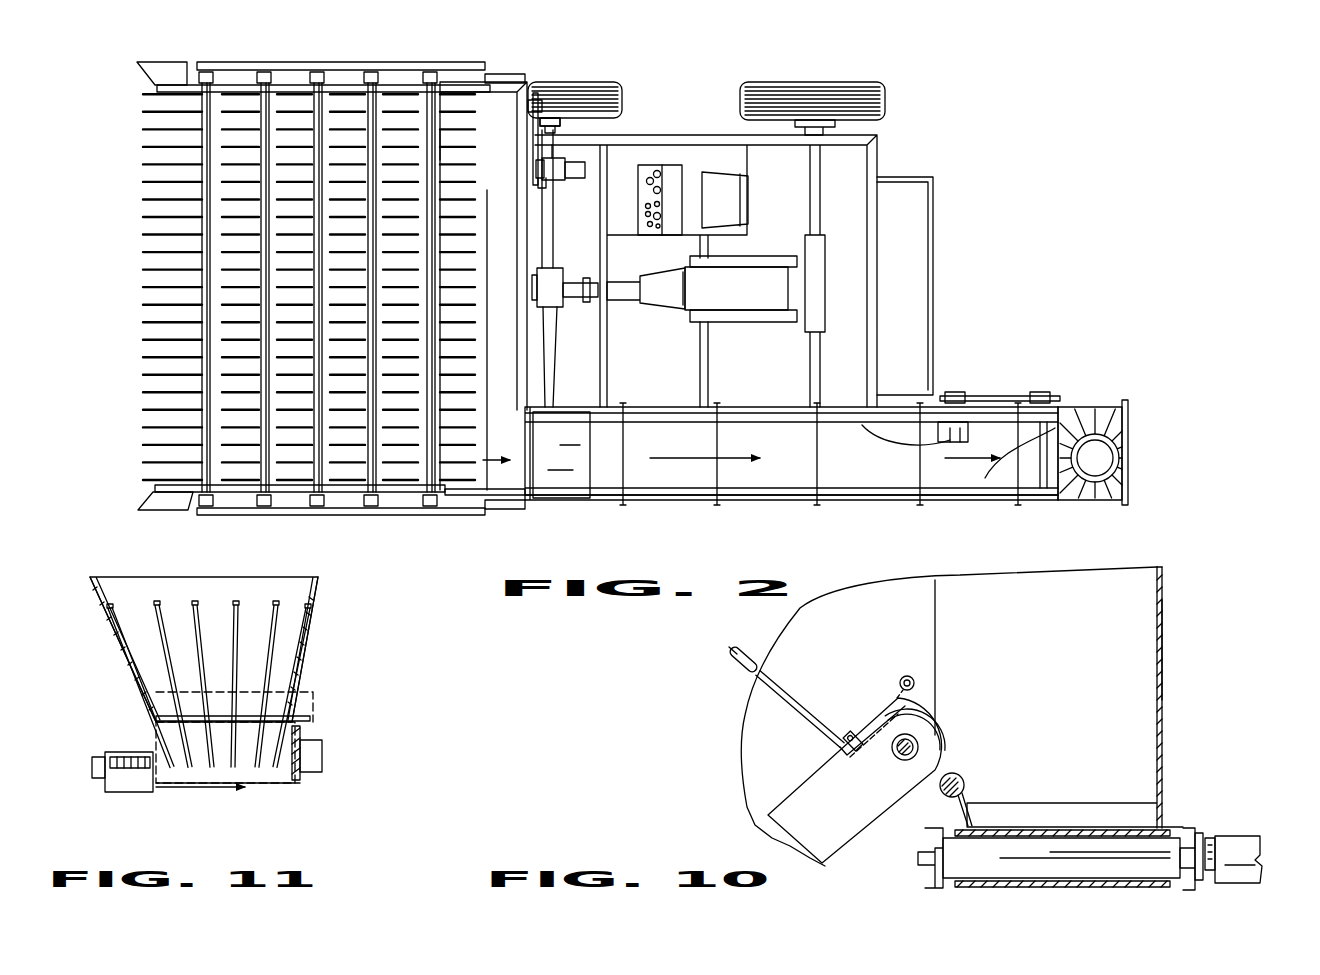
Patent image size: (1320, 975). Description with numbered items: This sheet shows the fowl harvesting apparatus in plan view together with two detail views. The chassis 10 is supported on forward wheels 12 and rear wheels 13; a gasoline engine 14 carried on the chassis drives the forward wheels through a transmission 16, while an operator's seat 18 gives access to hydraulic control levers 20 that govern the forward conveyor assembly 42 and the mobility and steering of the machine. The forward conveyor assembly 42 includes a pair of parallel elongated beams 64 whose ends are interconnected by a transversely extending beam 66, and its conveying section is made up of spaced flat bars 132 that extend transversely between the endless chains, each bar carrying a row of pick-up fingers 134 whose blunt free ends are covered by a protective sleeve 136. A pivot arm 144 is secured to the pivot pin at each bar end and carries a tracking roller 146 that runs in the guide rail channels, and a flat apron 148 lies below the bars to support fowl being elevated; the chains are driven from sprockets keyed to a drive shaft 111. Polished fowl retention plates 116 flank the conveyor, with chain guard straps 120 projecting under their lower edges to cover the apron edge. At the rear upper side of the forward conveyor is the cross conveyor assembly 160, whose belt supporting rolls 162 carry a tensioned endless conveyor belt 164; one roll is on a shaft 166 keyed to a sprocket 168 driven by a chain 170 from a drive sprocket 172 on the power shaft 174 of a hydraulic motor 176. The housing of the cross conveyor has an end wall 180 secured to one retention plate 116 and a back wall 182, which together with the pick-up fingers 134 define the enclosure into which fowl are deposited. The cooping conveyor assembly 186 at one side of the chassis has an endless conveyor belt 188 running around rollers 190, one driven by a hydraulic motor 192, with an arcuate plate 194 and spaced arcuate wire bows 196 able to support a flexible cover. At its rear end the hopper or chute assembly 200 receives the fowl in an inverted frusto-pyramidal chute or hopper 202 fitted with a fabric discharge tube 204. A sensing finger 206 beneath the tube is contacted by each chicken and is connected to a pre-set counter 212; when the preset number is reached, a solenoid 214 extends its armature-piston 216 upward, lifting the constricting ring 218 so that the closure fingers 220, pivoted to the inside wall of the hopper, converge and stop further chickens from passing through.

In FIG. 2, the chassis 10 is at (688, 110).
In FIG. 2, the forward wheels 12 is at (590, 82).
In FIG. 2, the rear wheels 13 is at (835, 82).
In FIG. 2, the gasoline engine 14 is at (740, 270).
In FIG. 2, the transmission 16 is at (660, 292).
In FIG. 2, the operator's seat 18 is at (745, 190).
In FIG. 2, the hydraulic control levers 20 is at (655, 165).
In FIG. 2, the forward conveyor assembly 42 is at (125, 296).
In FIG. 2, the elongated beams 64 is at (296, 62).
In FIG. 2, the transversely extending beam 66 is at (485, 66).
In FIG. 10, the drive shaft 111 is at (905, 762).
In FIG. 2, the fowl retention plate 116 is at (175, 66).
In FIG. 10, the fowl retention plate 116 is at (865, 635).
In FIG. 2, the chain guard straps 120 is at (158, 87).
In FIG. 2, the elongated bars 132 is at (373, 113).
In FIG. 10, the elongated bars 132 is at (845, 747).
In FIG. 2, the pick-up fingers 134 is at (140, 425).
In FIG. 10, the pick-up fingers 134 is at (785, 705).
In FIG. 10, the protective sleeve 136 is at (730, 655).
In FIG. 10, the pivot arm 144 is at (876, 707).
In FIG. 10, the tracking roller 146 is at (915, 681).
In FIG. 2, the apron 148 is at (466, 355).
In FIG. 10, the apron 148 is at (822, 797).
In FIG. 2, the cross conveyor assembly 160 is at (540, 255).
In FIG. 10, the cross conveyor assembly 160 is at (1168, 586).
In FIG. 10, the belt supporting rolls 162 is at (963, 880).
In FIG. 2, the endless conveyor belt 164 is at (508, 174).
In FIG. 10, the endless conveyor belt 164 is at (1087, 888).
In FIG. 2, the shaft 166 is at (528, 108).
In FIG. 2, the sprocket 168 is at (560, 120).
In FIG. 2, the chain 170 is at (533, 142).
In FIG. 10, the chain 170 is at (1197, 833).
In FIG. 2, the drive sprocket 172 is at (546, 180).
In FIG. 2, the power shaft 174 is at (545, 190).
In FIG. 10, the power shaft 174 is at (1210, 838).
In FIG. 2, the hydraulic motor 176 is at (585, 170).
In FIG. 10, the hydraulic motor 176 is at (1237, 845).
In FIG. 2, the end wall 180 is at (508, 90).
In FIG. 10, the end wall 180 is at (1082, 667).
In FIG. 2, the back wall 182 is at (537, 390).
In FIG. 10, the back wall 182 is at (1162, 646).
In FIG. 2, the cooping conveyor assembly 186 is at (838, 502).
In FIG. 2, the endless conveyor belt 188 is at (870, 465).
In FIG. 2, the rollers 190 is at (1045, 500).
In FIG. 2, the hydraulic motor 192 is at (968, 445).
In FIG. 2, the arcuate plate 194 is at (575, 455).
In FIG. 2, the arcuate wire bows 196 is at (623, 443).
In FIG. 2, the hopper or chute assembly 200 is at (1130, 458).
In FIG. 11, the hopper or chute assembly 200 is at (320, 640).
In FIG. 2, the chute or hopper 202 is at (1090, 498).
In FIG. 11, the chute or hopper 202 is at (93, 596).
In FIG. 11, the discharge tube 204 is at (285, 785).
In FIG. 11, the sensing finger 206 is at (195, 795).
In FIG. 11, the pre-set counter 212 is at (117, 785).
In FIG. 11, the solenoid 214 is at (322, 758).
In FIG. 11, the armature-piston 216 is at (312, 730).
In FIG. 2, the constricting ring 218 is at (1122, 480).
In FIG. 11, the constricting ring 218 is at (160, 716).
In FIG. 2, the closure fingers 220 is at (1092, 432).
In FIG. 11, the closure fingers 220 is at (230, 630).